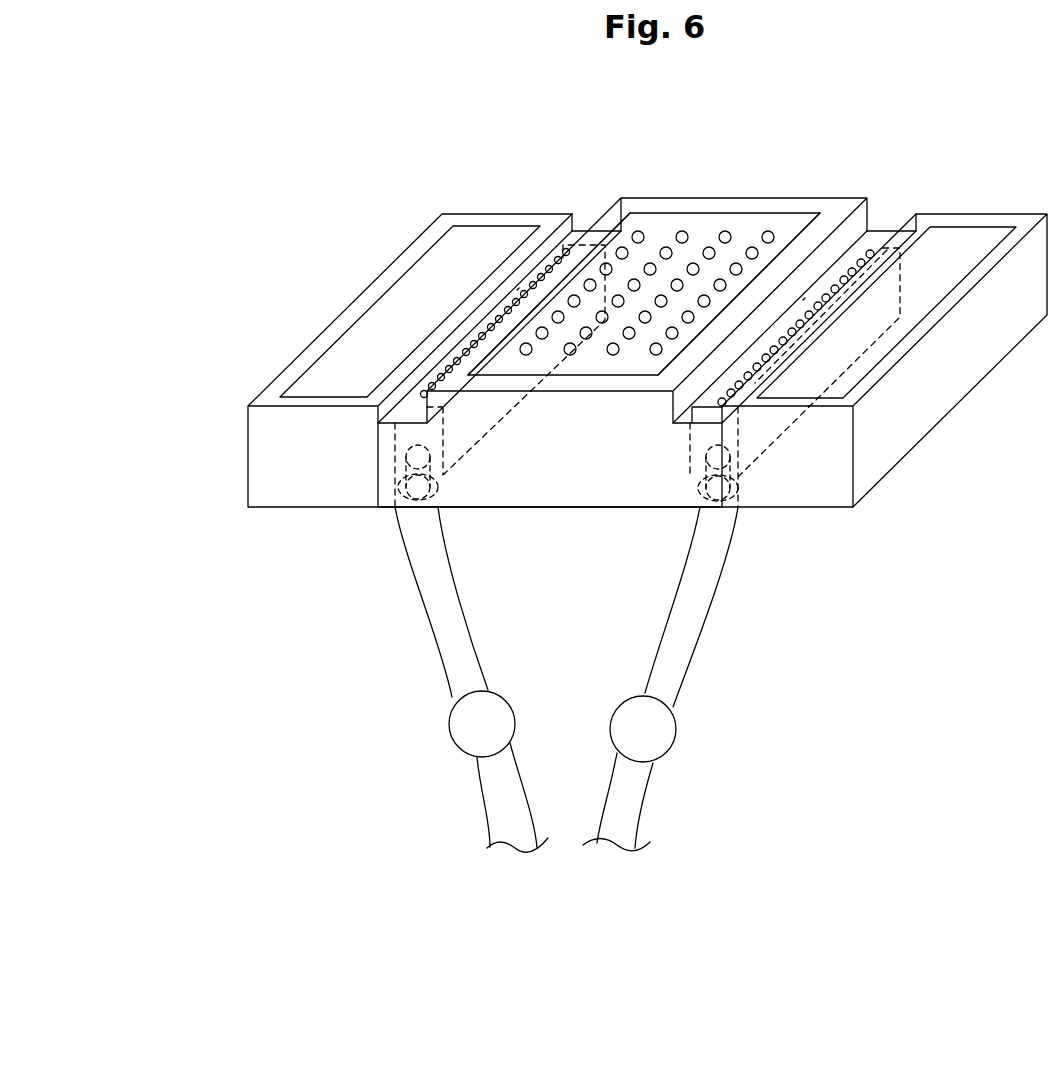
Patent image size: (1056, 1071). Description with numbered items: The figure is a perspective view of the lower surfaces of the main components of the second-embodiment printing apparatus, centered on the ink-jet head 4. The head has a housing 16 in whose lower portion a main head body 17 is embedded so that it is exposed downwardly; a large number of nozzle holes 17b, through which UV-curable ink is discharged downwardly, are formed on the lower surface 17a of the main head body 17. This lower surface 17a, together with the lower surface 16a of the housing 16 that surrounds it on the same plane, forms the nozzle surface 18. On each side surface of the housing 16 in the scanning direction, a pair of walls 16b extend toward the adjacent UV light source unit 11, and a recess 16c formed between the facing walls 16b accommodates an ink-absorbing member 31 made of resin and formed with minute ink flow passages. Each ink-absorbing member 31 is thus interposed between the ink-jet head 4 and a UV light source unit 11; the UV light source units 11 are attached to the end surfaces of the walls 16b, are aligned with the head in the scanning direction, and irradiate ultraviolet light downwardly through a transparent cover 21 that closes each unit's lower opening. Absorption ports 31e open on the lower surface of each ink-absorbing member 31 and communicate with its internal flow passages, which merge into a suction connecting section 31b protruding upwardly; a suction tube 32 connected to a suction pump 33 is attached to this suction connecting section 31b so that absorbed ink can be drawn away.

The ink-jet head 4 is at (562, 510).
The UV light source unit 11 is at (216, 464).
The housing 16 is at (484, 490).
The lower surface of the housing 16a is at (607, 225).
The wall 16b is at (575, 232).
The recess 16c is at (517, 290).
The main head body 17 is at (625, 365).
The lower surface of the main head body 17a is at (658, 223).
The nozzle hole 17b is at (718, 224).
The nozzle surface 18 is at (723, 110).
The transparent cover 21 is at (333, 357).
The ink-absorbing member 31 is at (540, 270).
The suction connecting section 31b is at (398, 478).
The absorption port 31e is at (512, 292).
The suction tube 32 is at (433, 658).
The suction pump 33 is at (449, 722).